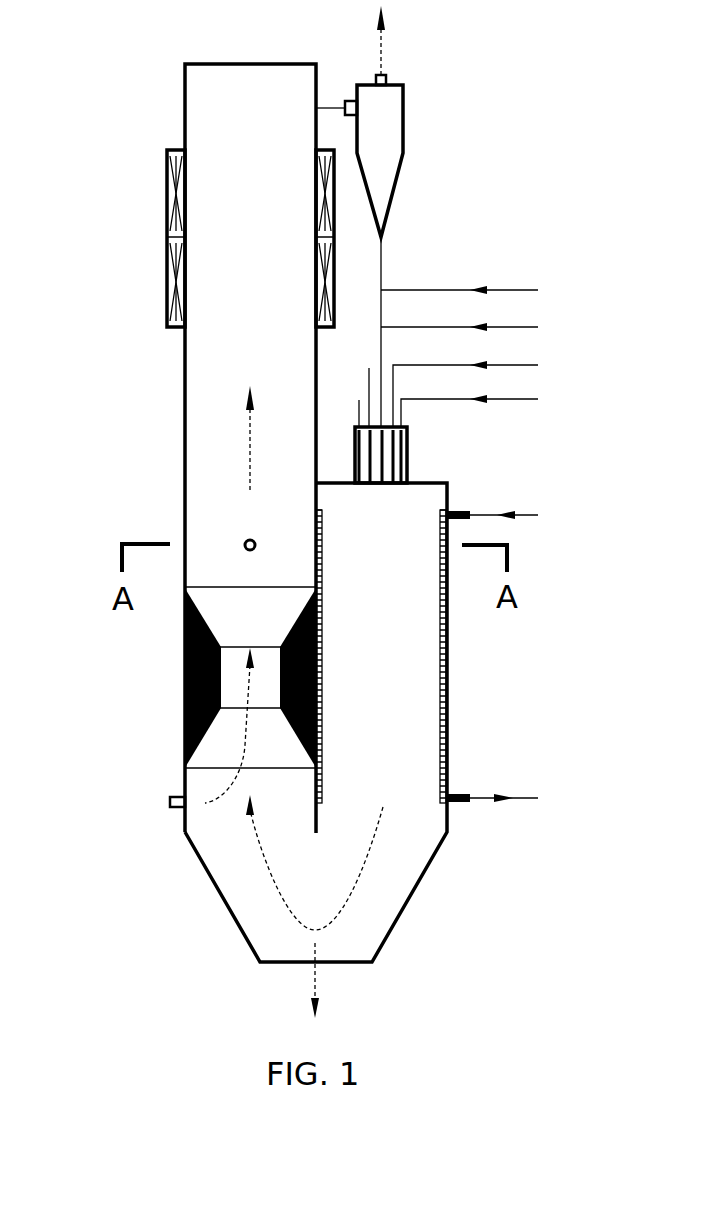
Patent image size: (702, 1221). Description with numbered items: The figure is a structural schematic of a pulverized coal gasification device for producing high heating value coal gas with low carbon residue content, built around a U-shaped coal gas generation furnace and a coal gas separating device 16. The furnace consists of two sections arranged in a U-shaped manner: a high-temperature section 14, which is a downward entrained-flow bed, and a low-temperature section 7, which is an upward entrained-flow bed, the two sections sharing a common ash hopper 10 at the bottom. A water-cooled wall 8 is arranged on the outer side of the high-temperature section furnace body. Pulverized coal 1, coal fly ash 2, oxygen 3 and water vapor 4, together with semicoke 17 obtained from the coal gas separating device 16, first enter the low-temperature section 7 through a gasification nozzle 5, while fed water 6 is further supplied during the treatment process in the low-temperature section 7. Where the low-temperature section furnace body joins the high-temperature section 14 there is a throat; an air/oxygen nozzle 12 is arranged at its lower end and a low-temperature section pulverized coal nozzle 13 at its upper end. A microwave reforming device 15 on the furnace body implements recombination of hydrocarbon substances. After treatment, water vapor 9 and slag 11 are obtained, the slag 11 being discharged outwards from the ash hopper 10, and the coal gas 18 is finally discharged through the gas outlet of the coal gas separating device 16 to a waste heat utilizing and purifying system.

The pulverized coal 1 is at (474, 290).
The coal fly ash 2 is at (474, 328).
The oxygen 3 is at (458, 372).
The water vapor 4 is at (452, 390).
The gasification nozzle 5 is at (408, 455).
The fed water 6 is at (507, 515).
The low-temperature section 7 is at (316, 722).
The water-cooled wall 8 is at (446, 693).
The water vapor 9 is at (507, 798).
The ash hopper 10 is at (314, 862).
The slag 11 is at (338, 984).
The air/oxygen nozzle 12 is at (170, 800).
The low-temperature section pulverized coal nozzle 13 is at (247, 541).
The high-temperature section 14 is at (250, 448).
The microwave reforming device 15 is at (167, 236).
The coal gas separating device 16 is at (360, 156).
The semicoke 17 is at (383, 267).
The coal gas 18 is at (405, 37).